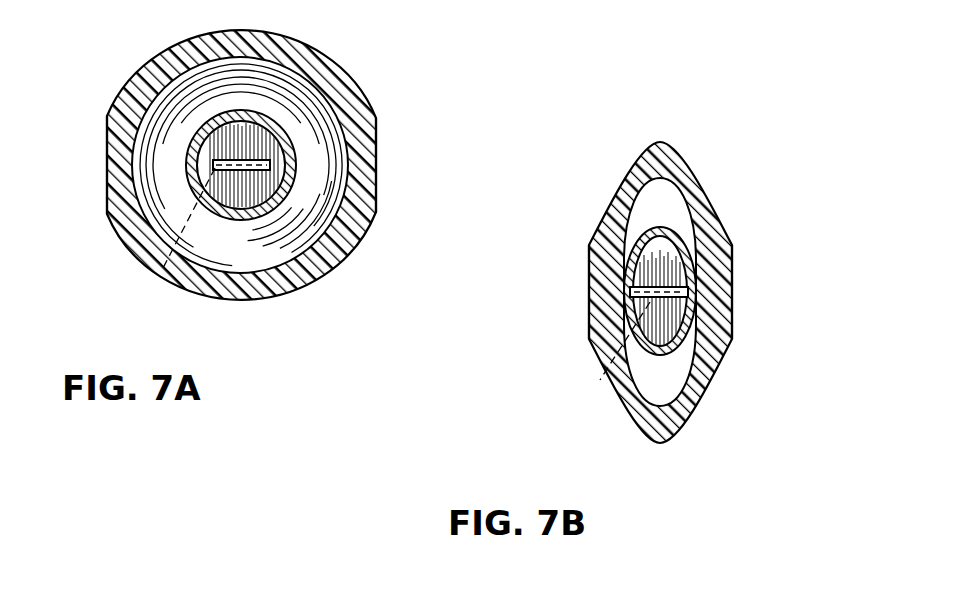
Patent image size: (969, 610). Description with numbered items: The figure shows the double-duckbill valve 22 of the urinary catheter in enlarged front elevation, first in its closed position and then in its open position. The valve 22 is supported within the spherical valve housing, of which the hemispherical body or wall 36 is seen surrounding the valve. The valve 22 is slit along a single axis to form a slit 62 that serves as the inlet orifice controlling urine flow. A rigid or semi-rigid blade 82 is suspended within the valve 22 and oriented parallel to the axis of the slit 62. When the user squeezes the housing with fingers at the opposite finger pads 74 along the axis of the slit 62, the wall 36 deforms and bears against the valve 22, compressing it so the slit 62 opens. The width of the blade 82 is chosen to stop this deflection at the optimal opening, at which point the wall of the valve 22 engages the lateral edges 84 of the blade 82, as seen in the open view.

In FIG. 7A, the double-duckbill valve 22 is at (283, 124).
In FIG. 7B, the double-duckbill valve 22 is at (677, 229).
In FIG. 7A, the hemispherical body or wall 36 is at (300, 278).
In FIG. 7B, the hemispherical body or wall 36 is at (700, 395).
In FIG. 7A, the slit 62 is at (160, 272).
In FIG. 7B, the slit 62 is at (598, 386).
In FIG. 7A, the finger pads 74 is at (106, 158).
In FIG. 7B, the finger pads 74 is at (590, 266).
In FIG. 7A, the blade 82 is at (262, 158).
In FIG. 7B, the blade 82 is at (688, 244).
In FIG. 7A, the lateral edges 84 is at (224, 164).
In FIG. 7B, the lateral edges 84 is at (632, 292).